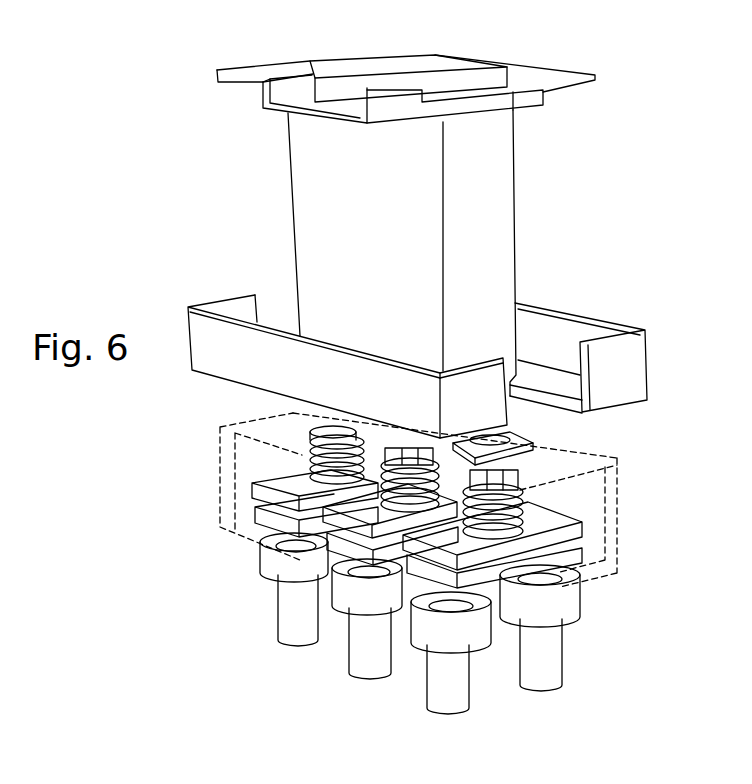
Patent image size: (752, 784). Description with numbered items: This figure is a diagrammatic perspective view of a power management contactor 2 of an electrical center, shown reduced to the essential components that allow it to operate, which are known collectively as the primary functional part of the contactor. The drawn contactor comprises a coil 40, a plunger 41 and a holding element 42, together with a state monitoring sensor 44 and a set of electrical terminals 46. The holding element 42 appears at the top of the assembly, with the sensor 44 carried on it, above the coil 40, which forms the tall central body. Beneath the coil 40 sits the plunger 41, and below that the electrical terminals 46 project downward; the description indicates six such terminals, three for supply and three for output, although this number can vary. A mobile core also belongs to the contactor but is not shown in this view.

The power management contactor 2 is at (206, 208).
The coil 40 is at (503, 237).
The plunger 41 is at (539, 455).
The holding element 42 is at (545, 72).
The state monitoring sensor 44 is at (312, 85).
The electrical terminals 46 is at (290, 621).